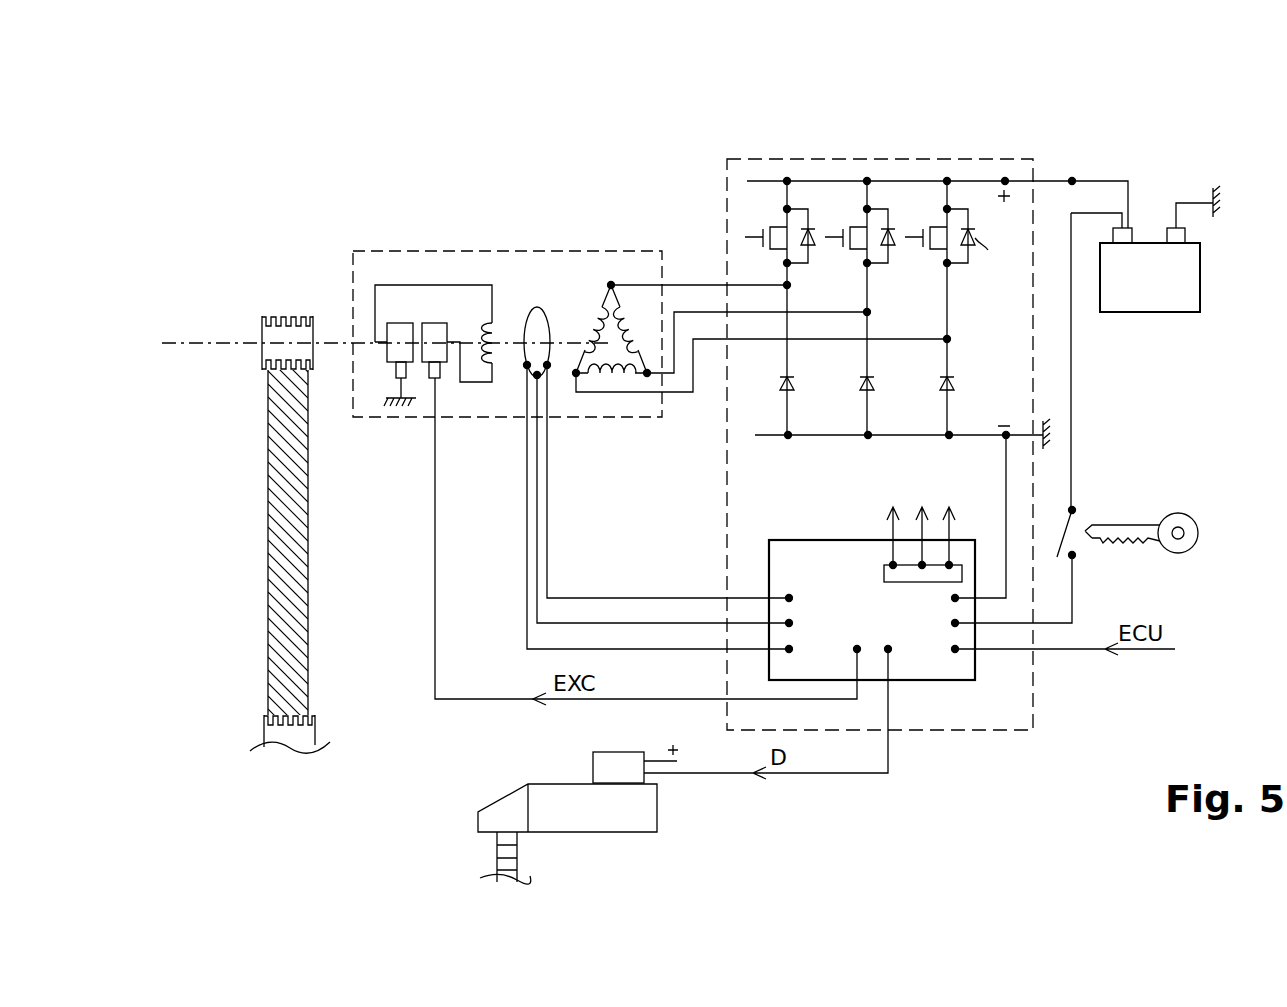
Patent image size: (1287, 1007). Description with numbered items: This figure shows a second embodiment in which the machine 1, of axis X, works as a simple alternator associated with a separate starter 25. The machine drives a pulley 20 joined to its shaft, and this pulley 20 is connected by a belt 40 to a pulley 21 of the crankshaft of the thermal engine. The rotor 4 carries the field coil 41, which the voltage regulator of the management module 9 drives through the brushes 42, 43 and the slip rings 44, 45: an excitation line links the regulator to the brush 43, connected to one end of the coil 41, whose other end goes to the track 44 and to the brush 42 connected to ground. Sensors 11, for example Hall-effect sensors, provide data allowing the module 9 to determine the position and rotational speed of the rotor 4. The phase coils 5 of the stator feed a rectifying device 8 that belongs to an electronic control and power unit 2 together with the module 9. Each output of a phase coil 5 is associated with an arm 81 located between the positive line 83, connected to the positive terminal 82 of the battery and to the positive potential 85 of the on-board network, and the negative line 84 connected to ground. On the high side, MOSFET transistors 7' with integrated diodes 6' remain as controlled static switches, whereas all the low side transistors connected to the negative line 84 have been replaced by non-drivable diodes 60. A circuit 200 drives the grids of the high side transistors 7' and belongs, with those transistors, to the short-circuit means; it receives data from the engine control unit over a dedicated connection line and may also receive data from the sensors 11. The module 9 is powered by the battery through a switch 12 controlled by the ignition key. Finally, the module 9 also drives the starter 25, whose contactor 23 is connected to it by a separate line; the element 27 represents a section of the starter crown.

The axis X is at (185, 343).
The alternator-starter 1 is at (505, 250).
The electronic control and power unit 2 is at (955, 158).
The rotor 4 is at (422, 275).
The phase coil 5 is at (582, 322).
The diode 6' is at (988, 262).
The high side transistor 7' is at (839, 246).
The rectifying device 8 is at (915, 344).
The management module 9 is at (872, 610).
The sensors 11 is at (515, 382).
The switch 12 is at (1077, 539).
The pulley 20 is at (282, 322).
The crankshaft pulley 21 is at (275, 738).
The contactor 23 is at (620, 763).
The starter 25 is at (490, 788).
The starter crown section 27 is at (505, 852).
The belt 40 is at (297, 507).
The field coil 41 is at (497, 331).
The brush 42 is at (400, 373).
The brush 43 is at (438, 375).
The slip ring 44 is at (400, 323).
The slip ring 45 is at (435, 323).
The diode 60 is at (941, 381).
The arm 81 is at (950, 298).
The positive terminal of the battery 82 is at (1126, 232).
The positive line 83 is at (845, 180).
The negative line 84 is at (968, 436).
The positive potential of on-board electrical network 85 is at (1072, 180).
The grid driving circuit 200 is at (884, 575).